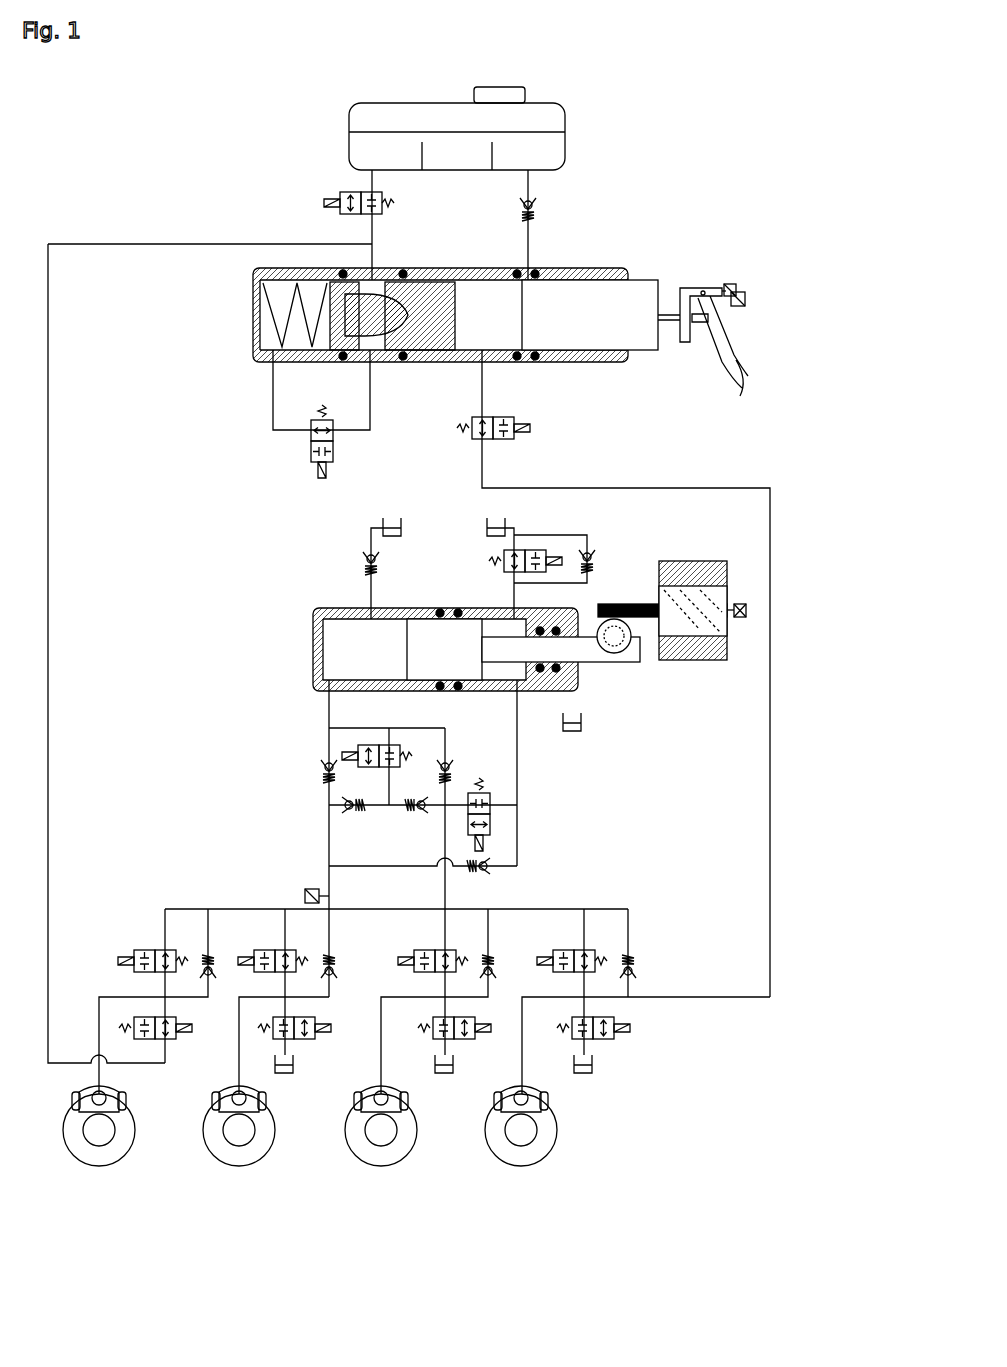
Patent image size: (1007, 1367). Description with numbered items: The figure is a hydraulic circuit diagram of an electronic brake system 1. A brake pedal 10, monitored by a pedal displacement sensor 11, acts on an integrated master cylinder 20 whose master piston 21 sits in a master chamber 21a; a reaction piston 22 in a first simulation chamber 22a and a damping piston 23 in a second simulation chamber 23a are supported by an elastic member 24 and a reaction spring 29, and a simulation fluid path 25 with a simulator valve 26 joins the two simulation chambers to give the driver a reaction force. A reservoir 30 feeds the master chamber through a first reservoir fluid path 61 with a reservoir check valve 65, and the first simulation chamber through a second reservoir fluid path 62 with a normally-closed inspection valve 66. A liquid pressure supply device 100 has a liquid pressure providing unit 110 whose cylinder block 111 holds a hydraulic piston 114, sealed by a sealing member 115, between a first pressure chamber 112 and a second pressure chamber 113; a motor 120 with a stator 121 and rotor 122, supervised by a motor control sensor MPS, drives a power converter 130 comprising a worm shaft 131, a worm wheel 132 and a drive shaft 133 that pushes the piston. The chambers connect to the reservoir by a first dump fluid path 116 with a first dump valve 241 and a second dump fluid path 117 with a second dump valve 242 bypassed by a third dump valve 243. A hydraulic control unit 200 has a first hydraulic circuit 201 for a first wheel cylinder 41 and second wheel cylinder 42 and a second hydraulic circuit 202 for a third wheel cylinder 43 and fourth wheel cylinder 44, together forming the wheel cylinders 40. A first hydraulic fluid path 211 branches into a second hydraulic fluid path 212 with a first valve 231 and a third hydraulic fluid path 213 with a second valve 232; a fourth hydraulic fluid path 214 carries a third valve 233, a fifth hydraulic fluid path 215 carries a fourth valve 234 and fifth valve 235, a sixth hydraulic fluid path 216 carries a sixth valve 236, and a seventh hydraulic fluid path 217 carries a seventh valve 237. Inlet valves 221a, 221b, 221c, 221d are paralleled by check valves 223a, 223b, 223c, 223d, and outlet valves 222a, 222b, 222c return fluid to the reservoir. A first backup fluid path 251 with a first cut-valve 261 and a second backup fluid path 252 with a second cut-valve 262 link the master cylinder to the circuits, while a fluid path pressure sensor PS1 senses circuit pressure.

The electronic brake system 1 is at (277, 95).
The brake pedal 10 is at (714, 352).
The pedal displacement sensor 11 is at (748, 300).
The integrated master cylinder 20 is at (253, 290).
The master piston 21 is at (648, 282).
The master chamber 21a is at (467, 275).
The reaction piston 22 is at (440, 348).
The first simulation chamber 22a is at (356, 268).
The damping piston 23 is at (349, 362).
The second simulation chamber 23a is at (279, 268).
The elastic member 24 is at (380, 340).
The simulation fluid path 25 is at (273, 398).
The simulator valve 26 is at (333, 448).
The reaction spring 29 is at (265, 322).
The reservoir 30 is at (349, 142).
The wheel cylinder 40 is at (370, 1132).
The first wheel cylinder 41 is at (523, 1088).
The second wheel cylinder 42 is at (382, 1088).
The third wheel cylinder 43 is at (272, 1140).
The fourth wheel cylinder 44 is at (132, 1140).
The first reservoir fluid path 61 is at (531, 244).
The second reservoir fluid path 62 is at (376, 237).
The reservoir check valve 65 is at (536, 208).
The inspection valve 66 is at (383, 196).
The liquid pressure supply device 100 is at (288, 583).
The liquid pressure providing unit 110 is at (292, 607).
The cylinder block 111 is at (332, 656).
The first pressure chamber 112 is at (330, 665).
The second pressure chamber 113 is at (517, 700).
The hydraulic piston 114 is at (470, 618).
The sealing member 115 is at (440, 610).
The first dump fluid path 116 is at (371, 598).
The second dump fluid path 117 is at (514, 600).
The motor 120 is at (715, 598).
The stator 121 is at (710, 656).
The rotor 122 is at (724, 633).
The power converter 130 is at (604, 618).
The worm shaft 131 is at (636, 600).
The worm wheel 132 is at (620, 648).
The drive shaft 133 is at (600, 668).
The hydraulic control unit 200 is at (327, 1168).
The first hydraulic circuit 201 is at (536, 1172).
The second hydraulic circuit 202 is at (253, 1172).
The first hydraulic fluid path 211 is at (329, 700).
The second hydraulic fluid path 212 is at (408, 728).
The third hydraulic fluid path 213 is at (329, 802).
The fourth hydraulic fluid path 214 is at (520, 770).
The fifth hydraulic fluid path 215 is at (383, 810).
The sixth hydraulic fluid path 216 is at (392, 780).
The seventh hydraulic fluid path 217 is at (517, 848).
The first inlet valve 221a is at (561, 950).
The second inlet valve 221b is at (422, 950).
The third inlet valve 221c is at (262, 950).
The fourth inlet valve 221d is at (143, 950).
The first outlet valve 222a is at (616, 1042).
The second outlet valve 222b is at (476, 1042).
The third outlet valve 222c is at (316, 1042).
The first check valve 223a is at (636, 978).
The second check valve 223b is at (496, 978).
The third check valve 223c is at (336, 978).
The fourth check valve 223d is at (214, 978).
The first valve 231 is at (452, 766).
The second valve 232 is at (320, 766).
The third valve 233 is at (492, 818).
The fourth valve 234 is at (418, 812).
The fifth valve 235 is at (352, 812).
The sixth valve 236 is at (365, 745).
The seventh valve 237 is at (488, 872).
The first dump valve 241 is at (364, 562).
The second dump valve 242 is at (530, 550).
The third dump valve 243 is at (592, 556).
The first backup fluid path 251 is at (770, 770).
The second backup fluid path 252 is at (48, 448).
The first cut-valve 261 is at (515, 420).
The second cut-valve 262 is at (178, 1042).
The fluid path pressure sensor PS1 is at (305, 897).
The motor control sensor MPS is at (742, 604).